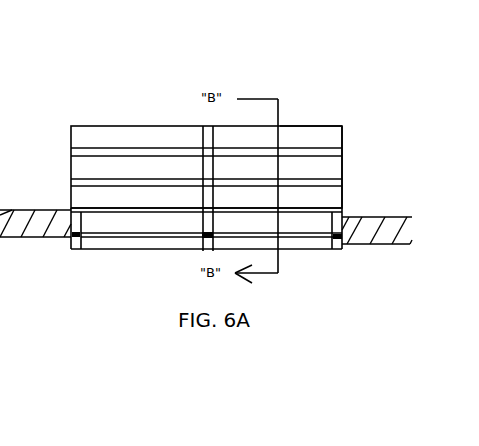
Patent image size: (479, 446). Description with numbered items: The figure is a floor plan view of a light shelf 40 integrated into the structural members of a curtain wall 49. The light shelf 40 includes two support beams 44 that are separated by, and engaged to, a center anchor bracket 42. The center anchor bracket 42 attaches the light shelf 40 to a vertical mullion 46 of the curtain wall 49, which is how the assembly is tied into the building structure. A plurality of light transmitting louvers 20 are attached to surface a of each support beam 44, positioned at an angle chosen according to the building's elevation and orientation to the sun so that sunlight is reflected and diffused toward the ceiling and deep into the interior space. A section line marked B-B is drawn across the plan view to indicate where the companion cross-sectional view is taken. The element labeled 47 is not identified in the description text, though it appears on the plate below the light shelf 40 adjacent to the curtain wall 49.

The light transmitting louver 20 is at (103, 137).
The light shelf 40 is at (343, 128).
The center anchor bracket 42 is at (212, 209).
The support beam 44 is at (212, 125).
The vertical mullion 46 is at (207, 232).
The base plate 47 is at (117, 222).
The curtain wall 49 is at (308, 252).